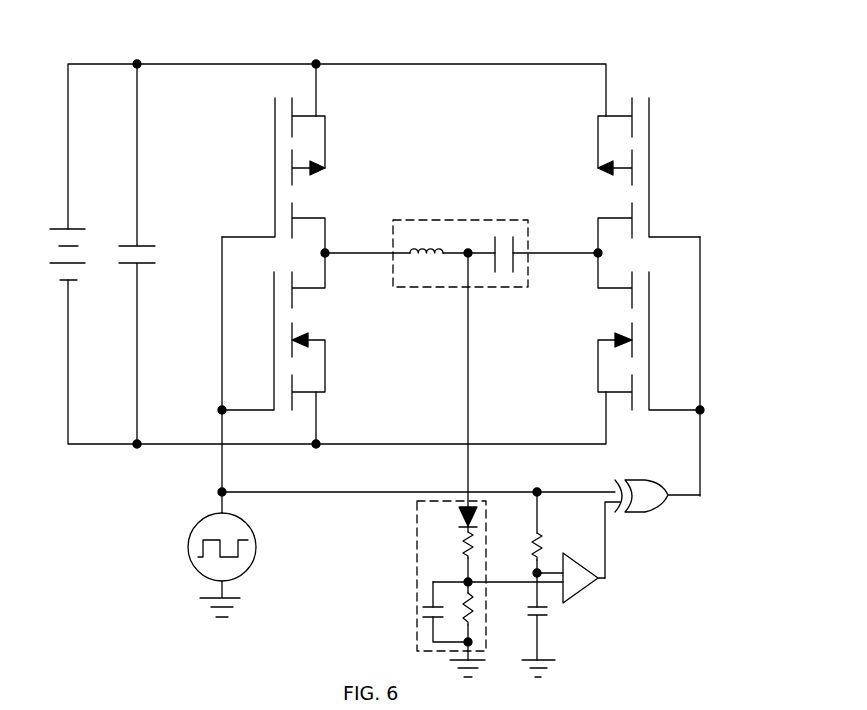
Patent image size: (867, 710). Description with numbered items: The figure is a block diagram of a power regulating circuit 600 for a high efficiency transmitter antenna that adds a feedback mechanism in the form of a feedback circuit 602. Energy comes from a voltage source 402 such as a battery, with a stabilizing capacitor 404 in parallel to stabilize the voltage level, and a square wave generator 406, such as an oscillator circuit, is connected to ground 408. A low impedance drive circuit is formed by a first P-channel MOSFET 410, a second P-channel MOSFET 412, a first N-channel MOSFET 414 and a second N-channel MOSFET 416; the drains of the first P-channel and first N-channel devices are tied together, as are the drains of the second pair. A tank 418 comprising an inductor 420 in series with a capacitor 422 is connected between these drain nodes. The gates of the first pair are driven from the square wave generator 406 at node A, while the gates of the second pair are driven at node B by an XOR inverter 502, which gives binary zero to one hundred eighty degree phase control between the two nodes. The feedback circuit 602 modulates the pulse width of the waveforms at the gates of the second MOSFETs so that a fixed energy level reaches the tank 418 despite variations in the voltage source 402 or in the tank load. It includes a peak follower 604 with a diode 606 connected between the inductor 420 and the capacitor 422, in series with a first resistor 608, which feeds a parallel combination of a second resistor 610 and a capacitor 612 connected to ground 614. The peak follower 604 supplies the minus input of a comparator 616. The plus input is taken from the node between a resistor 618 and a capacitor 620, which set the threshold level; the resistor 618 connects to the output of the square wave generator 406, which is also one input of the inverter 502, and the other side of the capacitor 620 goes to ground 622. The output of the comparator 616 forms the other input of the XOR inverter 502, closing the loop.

The voltage source 402 is at (85, 229).
The stabilizing capacitor 404 is at (155, 246).
The square wave generator 406 is at (188, 547).
The ground 408 is at (200, 598).
The first P-channel MOSFET 410 is at (345, 177).
The second P-channel MOSFET 412 is at (579, 177).
The first N-channel MOSFET 414 is at (346, 341).
The second N-channel MOSFET 416 is at (578, 341).
The tank 418 is at (443, 220).
The inductor 420 is at (415, 250).
The capacitor 422 is at (513, 252).
The inverter 502 is at (638, 480).
The circuit 600 is at (708, 75).
The feedback circuit 602 is at (657, 601).
The peak follower 604 is at (417, 524).
The diode 606 is at (477, 520).
The first resistor 608 is at (475, 552).
The second resistor 610 is at (475, 608).
The capacitor 612 is at (423, 607).
The ground 614 is at (450, 660).
The comparator 616 is at (578, 589).
The resistor 618 is at (545, 548).
The capacitor 620 is at (546, 615).
The ground 622 is at (552, 660).